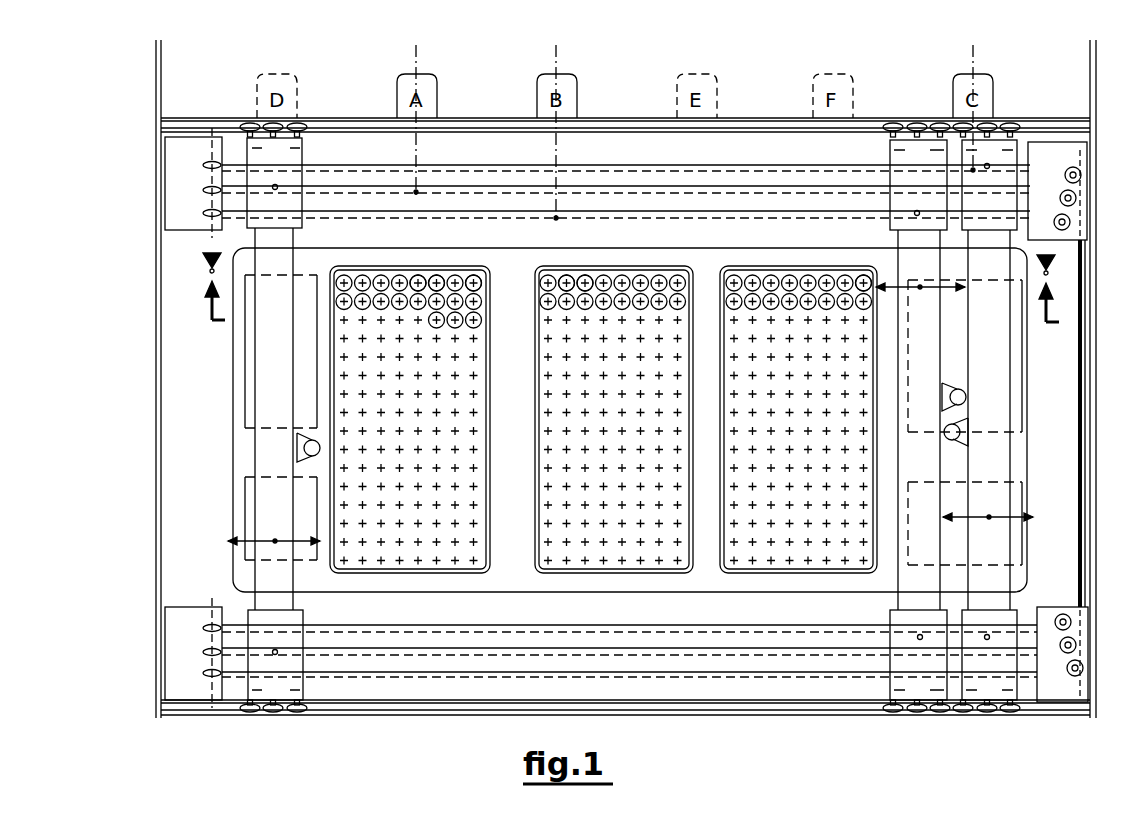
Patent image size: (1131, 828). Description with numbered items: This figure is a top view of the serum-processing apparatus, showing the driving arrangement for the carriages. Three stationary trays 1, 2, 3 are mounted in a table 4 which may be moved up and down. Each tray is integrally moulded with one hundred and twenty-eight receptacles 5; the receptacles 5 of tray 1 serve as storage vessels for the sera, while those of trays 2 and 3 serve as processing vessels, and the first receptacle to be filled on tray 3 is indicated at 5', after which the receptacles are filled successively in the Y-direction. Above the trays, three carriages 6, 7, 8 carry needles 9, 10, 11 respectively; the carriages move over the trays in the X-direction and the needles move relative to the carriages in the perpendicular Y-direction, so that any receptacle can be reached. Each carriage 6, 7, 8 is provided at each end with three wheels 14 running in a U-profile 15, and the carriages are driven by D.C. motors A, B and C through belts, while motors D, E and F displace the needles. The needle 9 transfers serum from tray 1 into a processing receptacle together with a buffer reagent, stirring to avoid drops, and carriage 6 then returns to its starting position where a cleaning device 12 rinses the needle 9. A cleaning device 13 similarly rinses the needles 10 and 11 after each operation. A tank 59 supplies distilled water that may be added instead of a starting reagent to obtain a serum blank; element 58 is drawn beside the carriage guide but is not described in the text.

The tray 1 is at (408, 578).
The tray 2 is at (615, 575).
The tray 3 is at (790, 575).
The table 4 is at (245, 465).
The receptacles 5 is at (501, 259).
The first receptacle to be filled 5' is at (861, 259).
The carriage 6 is at (265, 584).
The carriage 7 is at (915, 585).
The carriage 8 is at (995, 586).
The needle 9 is at (304, 446).
The needle 10 is at (961, 391).
The needle 11 is at (955, 441).
The cleaning device 12 is at (250, 375).
The cleaning device 13 is at (1012, 374).
The wheels 14 is at (297, 123).
The U-profile 15 is at (339, 123).
The actuator 58 is at (250, 501).
The tank 59 is at (1012, 479).